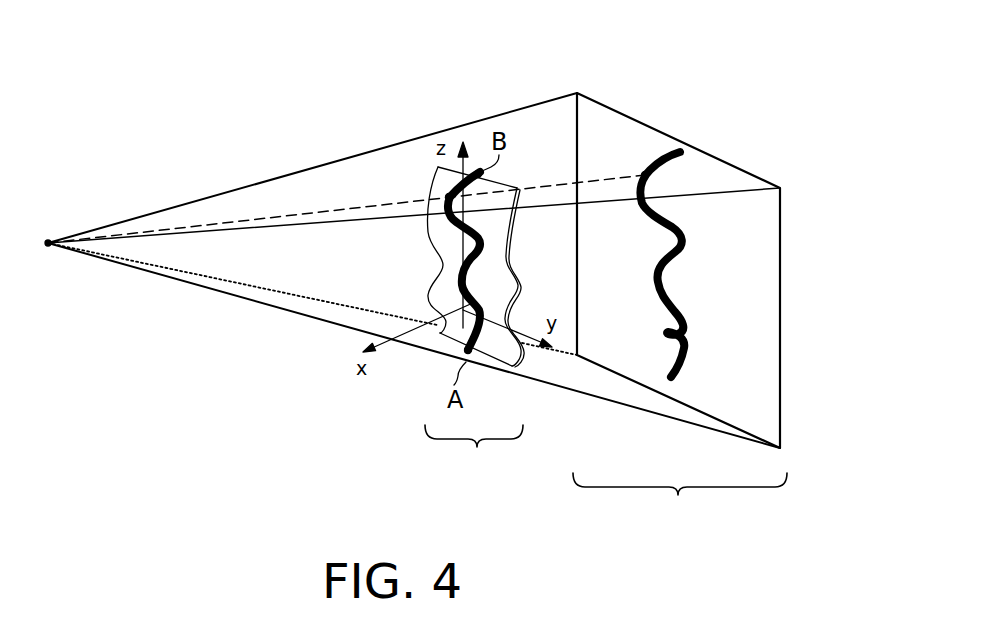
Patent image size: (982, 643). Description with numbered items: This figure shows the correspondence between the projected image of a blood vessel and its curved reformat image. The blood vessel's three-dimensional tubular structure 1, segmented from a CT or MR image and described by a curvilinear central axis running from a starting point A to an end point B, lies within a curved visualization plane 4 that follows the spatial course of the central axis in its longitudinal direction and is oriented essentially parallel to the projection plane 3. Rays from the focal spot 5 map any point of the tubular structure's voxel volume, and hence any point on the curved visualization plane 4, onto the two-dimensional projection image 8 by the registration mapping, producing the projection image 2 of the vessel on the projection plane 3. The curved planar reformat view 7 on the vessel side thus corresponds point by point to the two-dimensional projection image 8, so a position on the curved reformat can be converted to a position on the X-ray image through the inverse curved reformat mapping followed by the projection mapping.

The 3D tubular structure 1 is at (483, 243).
The projection image 2 is at (685, 232).
The projection plane 3 is at (608, 120).
The curved visualization plane 4 is at (442, 263).
The focal spot 5 is at (48, 246).
The curved planar reformat view 7 is at (474, 451).
The 2D projection image 8 is at (680, 499).